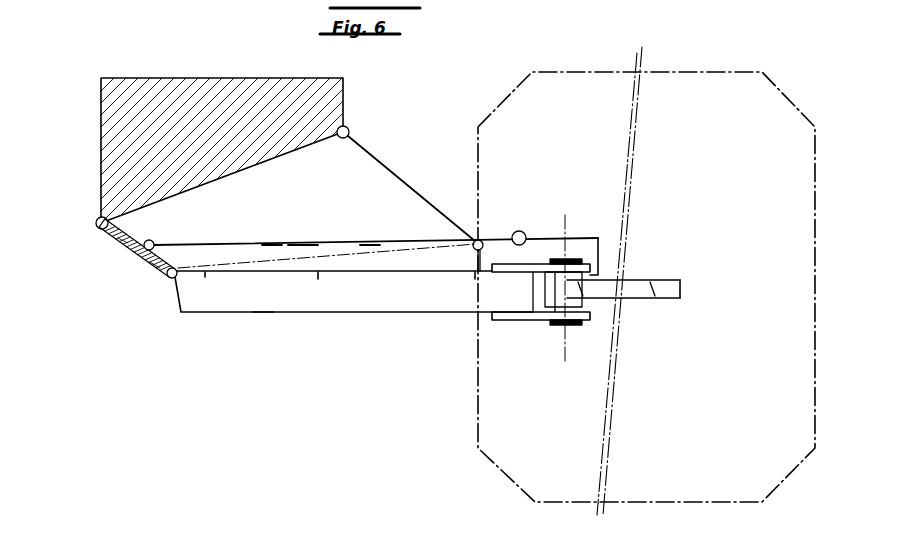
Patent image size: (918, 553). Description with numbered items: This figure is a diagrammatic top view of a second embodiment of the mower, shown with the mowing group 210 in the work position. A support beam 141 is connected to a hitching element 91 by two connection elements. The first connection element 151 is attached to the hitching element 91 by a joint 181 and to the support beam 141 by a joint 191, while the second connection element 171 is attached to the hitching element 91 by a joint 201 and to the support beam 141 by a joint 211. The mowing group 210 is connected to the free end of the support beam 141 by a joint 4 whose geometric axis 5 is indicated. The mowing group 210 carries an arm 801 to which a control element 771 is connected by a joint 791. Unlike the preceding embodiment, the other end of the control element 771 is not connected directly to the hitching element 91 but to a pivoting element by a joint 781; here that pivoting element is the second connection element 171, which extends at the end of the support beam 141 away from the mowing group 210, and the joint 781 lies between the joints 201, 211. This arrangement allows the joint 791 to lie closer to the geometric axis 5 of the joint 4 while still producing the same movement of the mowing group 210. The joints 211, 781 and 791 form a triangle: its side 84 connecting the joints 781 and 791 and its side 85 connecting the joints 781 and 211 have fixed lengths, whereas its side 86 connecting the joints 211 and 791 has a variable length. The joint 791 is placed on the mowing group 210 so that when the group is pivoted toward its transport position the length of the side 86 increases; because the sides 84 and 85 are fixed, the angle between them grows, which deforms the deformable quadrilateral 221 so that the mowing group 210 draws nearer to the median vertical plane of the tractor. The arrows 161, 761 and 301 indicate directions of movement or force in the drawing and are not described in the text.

The hitching element 91 is at (205, 78).
The joint 181 is at (349, 131).
The first connection element 151 is at (403, 182).
The joint 191 is at (474, 238).
The joint 791 is at (519, 231).
The geometric axis 5 is at (566, 226).
The arm 801 is at (599, 239).
The force direction 761 is at (272, 244).
The deformable quadrilateral 221 is at (316, 203).
The control element 771 is at (370, 244).
The side 84 is at (238, 244).
The side 86 is at (410, 256).
The joint 201 is at (96, 222).
The direction of movement 161 is at (116, 243).
The second connection element 171 is at (140, 252).
The side 85 is at (154, 266).
The joint 781 is at (153, 242).
The joint 211 is at (170, 278).
The force direction 301 is at (263, 314).
The support beam 141 is at (338, 313).
The joint 4 is at (553, 324).
The mowing group 210 is at (667, 300).